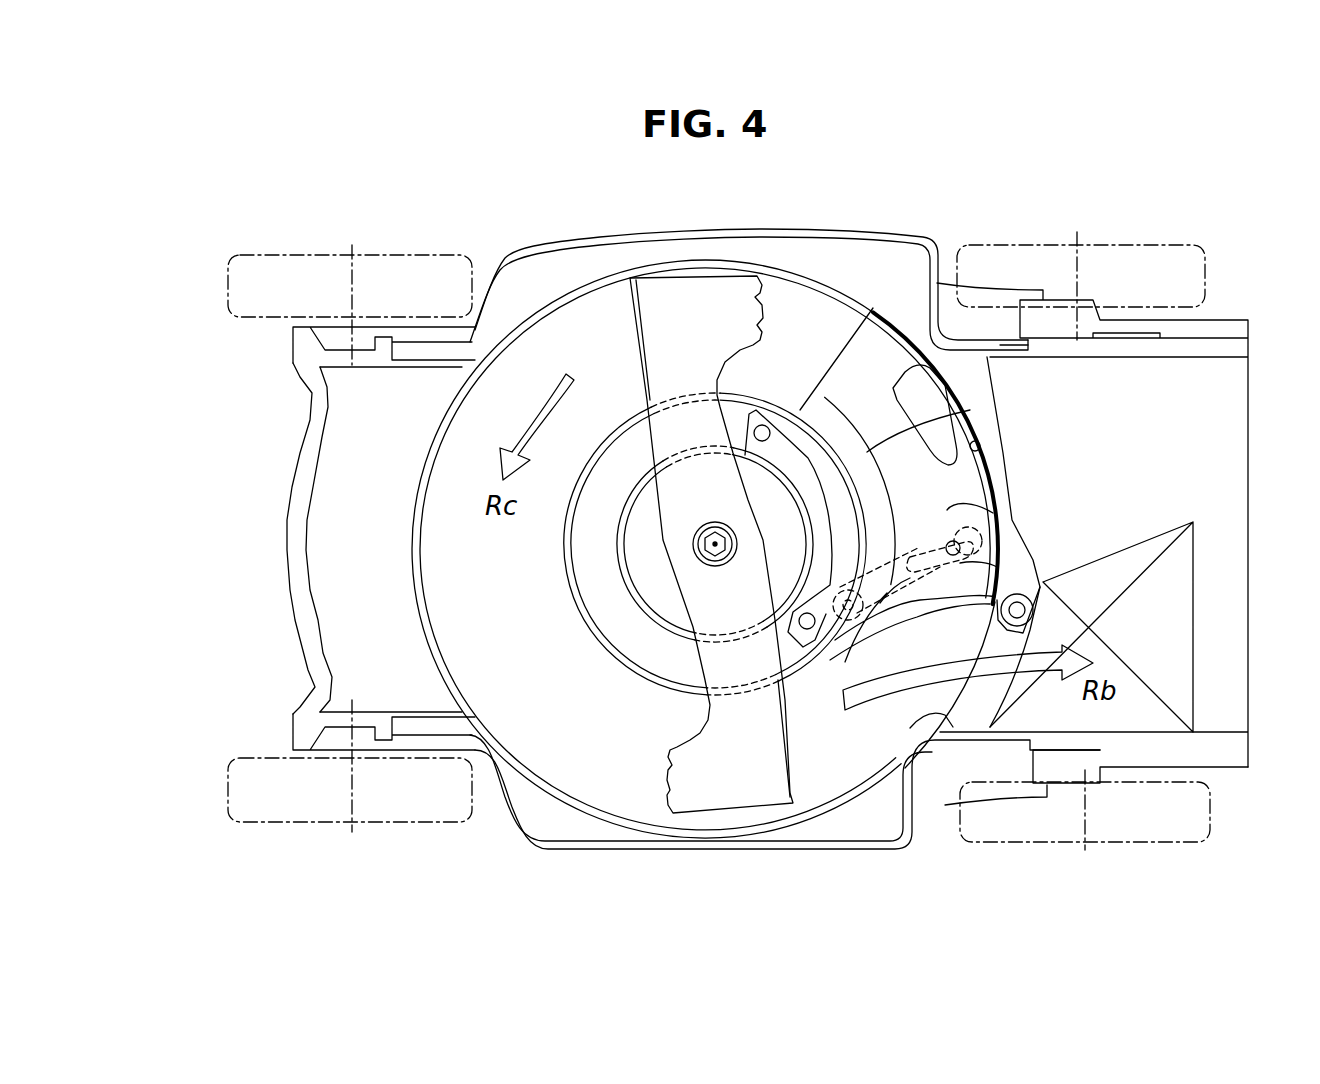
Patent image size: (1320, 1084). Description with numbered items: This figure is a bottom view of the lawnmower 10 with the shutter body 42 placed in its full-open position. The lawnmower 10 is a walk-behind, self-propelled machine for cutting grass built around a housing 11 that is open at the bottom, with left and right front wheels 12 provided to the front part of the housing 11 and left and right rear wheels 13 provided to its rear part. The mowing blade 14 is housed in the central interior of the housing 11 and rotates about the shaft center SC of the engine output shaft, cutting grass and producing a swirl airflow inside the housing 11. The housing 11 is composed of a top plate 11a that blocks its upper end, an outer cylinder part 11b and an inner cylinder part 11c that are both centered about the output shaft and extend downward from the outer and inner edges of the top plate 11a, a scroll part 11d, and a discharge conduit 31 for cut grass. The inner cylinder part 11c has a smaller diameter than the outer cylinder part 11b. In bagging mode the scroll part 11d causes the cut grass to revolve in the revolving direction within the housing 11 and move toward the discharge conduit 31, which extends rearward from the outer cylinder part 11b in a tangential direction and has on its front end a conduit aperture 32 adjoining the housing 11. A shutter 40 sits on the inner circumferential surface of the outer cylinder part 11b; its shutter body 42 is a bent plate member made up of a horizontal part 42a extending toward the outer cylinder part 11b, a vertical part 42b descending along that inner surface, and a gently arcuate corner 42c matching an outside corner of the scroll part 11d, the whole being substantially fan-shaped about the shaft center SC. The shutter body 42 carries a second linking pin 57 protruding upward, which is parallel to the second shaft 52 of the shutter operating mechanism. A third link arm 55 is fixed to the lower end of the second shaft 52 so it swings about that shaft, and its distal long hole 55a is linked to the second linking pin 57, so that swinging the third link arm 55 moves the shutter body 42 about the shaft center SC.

The lawnmower 10 is at (182, 197).
The housing 11 is at (290, 479).
The top plate 11a is at (466, 570).
The outer cylinder part 11b is at (432, 626).
The inner cylinder part 11c is at (578, 605).
The scroll part 11d is at (518, 688).
The front wheels 12 is at (228, 297).
The rear wheels 13 is at (1042, 245).
The mowing blade 14 is at (727, 795).
The discharge conduit for cut grass 31 is at (1147, 712).
The conduit aperture 32 is at (907, 782).
The shutter 40 is at (887, 360).
The shutter body 42 is at (1090, 370).
The horizontal part 42a is at (995, 400).
The vertical part 42b is at (980, 433).
The corner 42c is at (963, 483).
The second shaft 52 is at (860, 625).
The third link arm 55 is at (1000, 555).
The long hole 55a is at (948, 533).
The second linking pin 57 is at (953, 517).
The shaft center SC is at (715, 560).